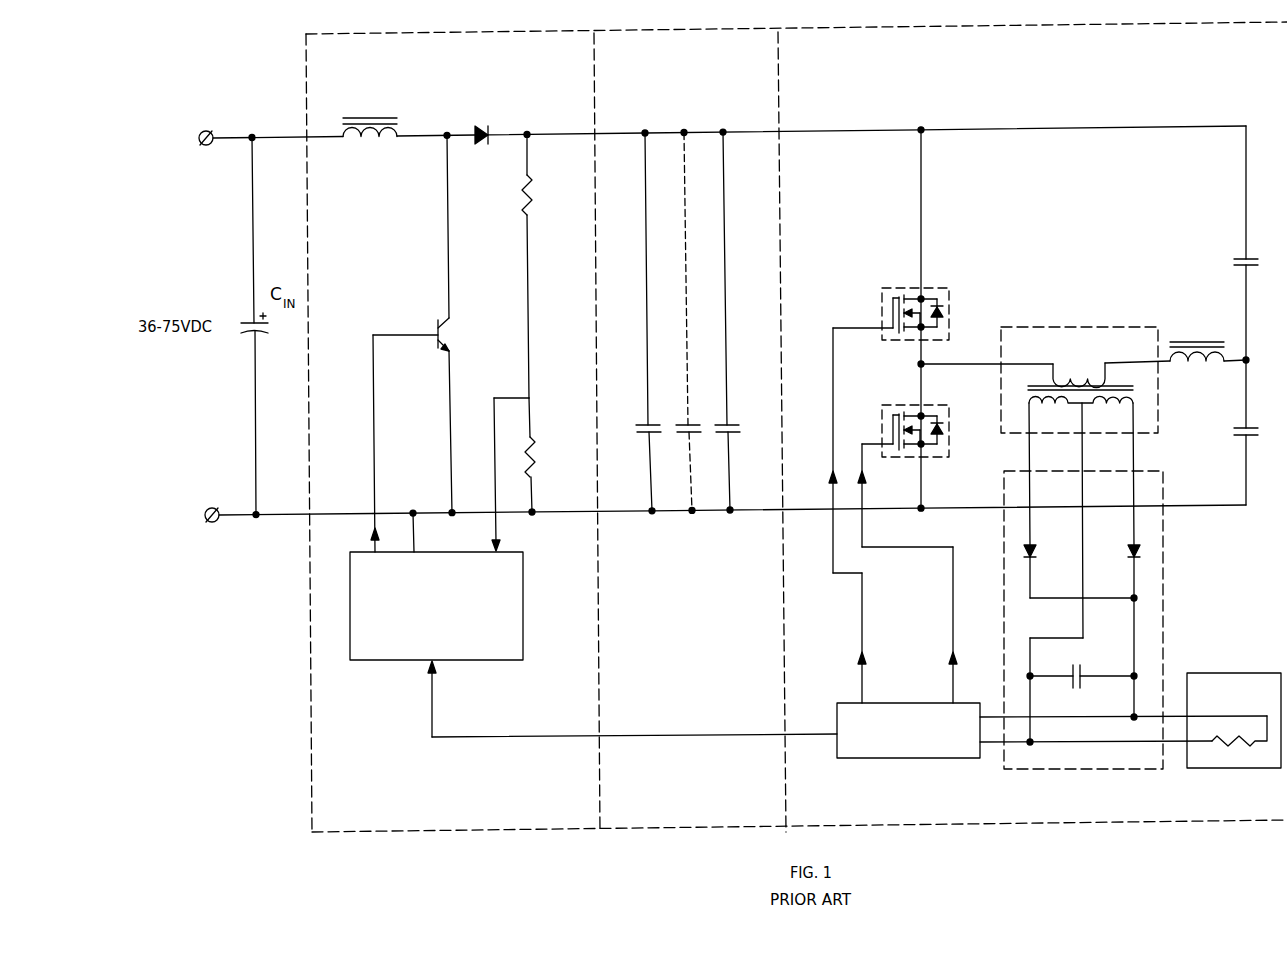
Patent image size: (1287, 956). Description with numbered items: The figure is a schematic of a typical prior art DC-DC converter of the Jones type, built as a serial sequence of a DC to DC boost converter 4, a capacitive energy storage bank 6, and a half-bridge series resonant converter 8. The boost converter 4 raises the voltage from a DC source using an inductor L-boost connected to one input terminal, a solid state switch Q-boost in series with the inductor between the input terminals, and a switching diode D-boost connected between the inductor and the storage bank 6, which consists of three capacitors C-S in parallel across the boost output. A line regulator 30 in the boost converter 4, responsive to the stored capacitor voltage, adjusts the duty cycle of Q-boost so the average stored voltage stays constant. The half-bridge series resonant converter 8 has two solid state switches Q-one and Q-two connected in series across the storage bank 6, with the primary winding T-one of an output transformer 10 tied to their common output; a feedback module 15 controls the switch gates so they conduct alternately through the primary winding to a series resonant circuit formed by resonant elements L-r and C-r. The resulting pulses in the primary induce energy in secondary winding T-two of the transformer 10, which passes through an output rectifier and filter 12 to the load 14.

The DC to DC boost converter 4 is at (486, 300).
The capacitive energy storage bank 6 is at (757, 432).
The half-bridge series resonant converter 8 is at (1029, 432).
The transformer 10 is at (1079, 482).
The output rectifier and filter 12 is at (1083, 620).
The load 14 is at (1226, 720).
The feedback module 15 is at (1052, 730).
The line regulator 30 is at (593, 644).